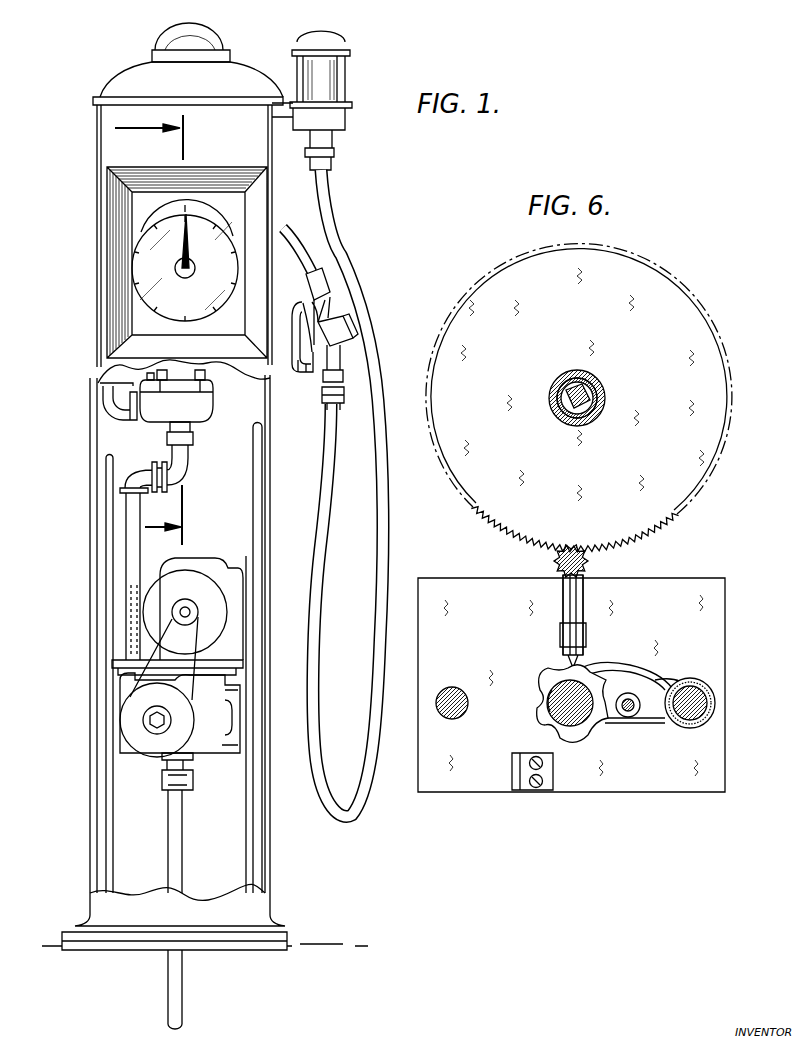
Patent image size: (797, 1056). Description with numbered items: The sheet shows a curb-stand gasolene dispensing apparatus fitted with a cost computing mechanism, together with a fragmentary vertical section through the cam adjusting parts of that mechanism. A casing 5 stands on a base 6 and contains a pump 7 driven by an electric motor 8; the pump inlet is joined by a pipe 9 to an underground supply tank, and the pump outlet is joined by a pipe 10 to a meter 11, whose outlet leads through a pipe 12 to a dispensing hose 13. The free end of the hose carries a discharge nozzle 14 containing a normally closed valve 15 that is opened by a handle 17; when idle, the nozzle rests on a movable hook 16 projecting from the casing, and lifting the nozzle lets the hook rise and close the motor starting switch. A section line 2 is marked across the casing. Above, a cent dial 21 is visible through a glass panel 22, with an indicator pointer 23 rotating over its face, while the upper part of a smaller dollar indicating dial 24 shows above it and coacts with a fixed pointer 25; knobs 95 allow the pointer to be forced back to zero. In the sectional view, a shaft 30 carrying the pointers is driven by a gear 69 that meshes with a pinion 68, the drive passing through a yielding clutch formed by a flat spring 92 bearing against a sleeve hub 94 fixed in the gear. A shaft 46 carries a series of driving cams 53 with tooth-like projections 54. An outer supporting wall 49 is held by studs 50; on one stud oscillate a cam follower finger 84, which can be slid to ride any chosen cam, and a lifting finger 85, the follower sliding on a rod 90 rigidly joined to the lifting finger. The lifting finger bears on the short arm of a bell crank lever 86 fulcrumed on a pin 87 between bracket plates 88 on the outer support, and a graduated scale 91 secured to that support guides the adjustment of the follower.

In FIG. 1, the section line 2- 2 is at (161, 330).
In FIG. 1, the casing 5 is at (271, 434).
In FIG. 1, the base 6 is at (268, 933).
In FIG. 1, the pump 7 is at (217, 726).
In FIG. 1, the electric motor 8 is at (218, 607).
In FIG. 1, the pipe 9 is at (180, 832).
In FIG. 1, the pipe 10 is at (132, 540).
In FIG. 1, the meter 11 is at (203, 404).
In FIG. 1, the pipe 12 is at (115, 374).
In FIG. 1, the dispensing hose 13 is at (342, 268).
In FIG. 1, the discharge nozzle 14 is at (340, 360).
In FIG. 1, the valve 15 is at (347, 327).
In FIG. 1, the hook 16 is at (287, 338).
In FIG. 1, the handle 17 is at (310, 380).
In FIG. 1, the dials 21 is at (138, 295).
In FIG. 1, the glass panels 22 is at (232, 213).
In FIG. 1, the indicator pointer 23 is at (192, 252).
In FIG. 1, the dollar indicating dials 24 is at (150, 213).
In FIG. 1, the fixed pointer 25 is at (187, 203).
In FIG. 1, the knobs 95 is at (183, 274).
In FIG. 6, the shaft 30 is at (587, 428).
In FIG. 6, the shaft 46 is at (575, 720).
In FIG. 6, the outer supporting wall 49 is at (658, 778).
In FIG. 6, the studs 50 is at (468, 668).
In FIG. 6, the driving cams 53 is at (535, 682).
In FIG. 6, the teeth 54 is at (535, 708).
In FIG. 6, the pinion 68 is at (590, 565).
In FIG. 6, the gear 69 is at (668, 522).
In FIG. 6, the cam follower finger 84 is at (660, 698).
In FIG. 6, the lifting finger 85 is at (648, 680).
In FIG. 6, the bell crank lever 86 is at (572, 612).
In FIG. 6, the pin 87 is at (586, 637).
In FIG. 6, the bracket plates 88 is at (564, 592).
In FIG. 6, the rod 90 is at (624, 717).
In FIG. 6, the scale 91 is at (510, 775).
In FIG. 6, the flat spring 92 is at (558, 403).
In FIG. 6, the sleeve hub 94 is at (583, 384).